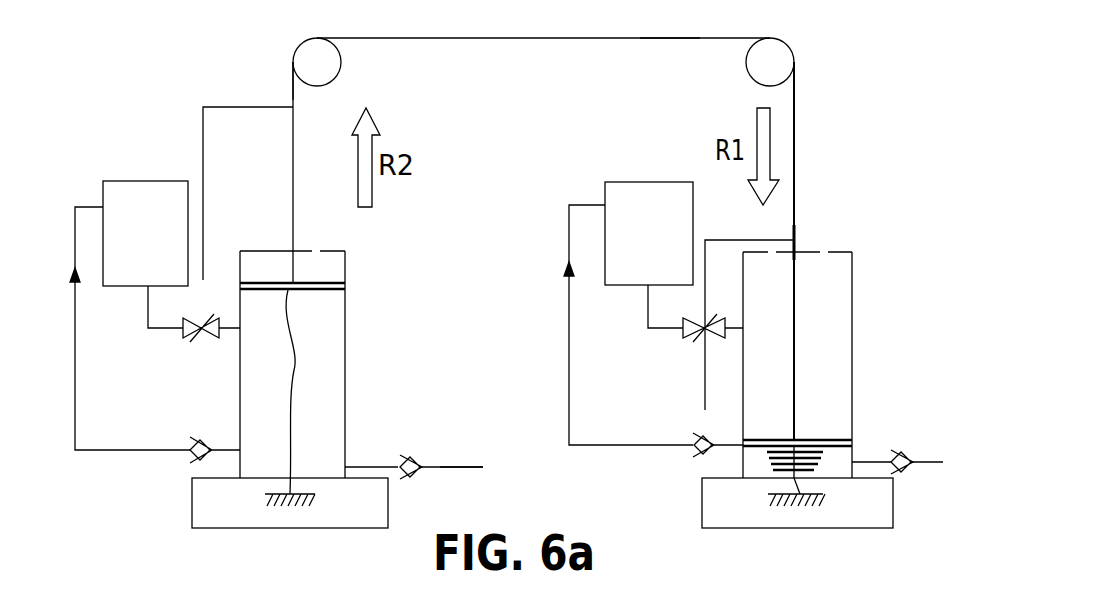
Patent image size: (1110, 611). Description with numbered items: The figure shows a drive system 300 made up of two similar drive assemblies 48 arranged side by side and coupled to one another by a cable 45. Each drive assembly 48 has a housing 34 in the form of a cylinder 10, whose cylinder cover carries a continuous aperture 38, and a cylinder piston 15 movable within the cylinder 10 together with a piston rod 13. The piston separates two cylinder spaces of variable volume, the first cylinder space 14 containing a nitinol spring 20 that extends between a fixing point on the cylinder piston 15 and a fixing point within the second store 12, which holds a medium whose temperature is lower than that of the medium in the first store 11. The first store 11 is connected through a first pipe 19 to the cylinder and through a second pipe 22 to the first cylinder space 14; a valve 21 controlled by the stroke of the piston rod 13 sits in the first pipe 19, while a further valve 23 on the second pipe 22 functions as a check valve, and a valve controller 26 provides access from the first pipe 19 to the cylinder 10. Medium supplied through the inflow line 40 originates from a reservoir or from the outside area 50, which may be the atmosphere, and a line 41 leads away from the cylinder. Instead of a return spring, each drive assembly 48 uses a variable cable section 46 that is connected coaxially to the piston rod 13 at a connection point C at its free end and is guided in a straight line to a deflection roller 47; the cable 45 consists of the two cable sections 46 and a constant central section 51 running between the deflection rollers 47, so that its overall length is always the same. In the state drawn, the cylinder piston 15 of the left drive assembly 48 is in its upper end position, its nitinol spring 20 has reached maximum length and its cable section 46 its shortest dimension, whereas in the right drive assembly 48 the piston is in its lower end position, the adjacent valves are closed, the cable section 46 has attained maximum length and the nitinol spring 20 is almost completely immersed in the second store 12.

The cylinder 10 is at (346, 350).
The first store 11 is at (155, 181).
The second store 12 is at (192, 505).
The piston rod 13 is at (300, 180).
The first cylinder space 14 is at (325, 393).
The cylinder piston 15 is at (324, 290).
The first pipe 19 is at (172, 333).
The nitinol spring 20 is at (287, 423).
The valve 21 is at (195, 340).
The second pipe 22 is at (78, 407).
The further valve 23 is at (690, 440).
The valve controller 26 is at (202, 122).
The housing 34 is at (365, 333).
The continuous aperture 38 is at (262, 250).
The inflow line 40 is at (442, 462).
The valve 41 is at (412, 456).
The cable 45 is at (498, 37).
The cable section 46 is at (290, 82).
The deflection roller 47 is at (312, 50).
The drive assembly 48 is at (125, 157).
The outside area 50 is at (937, 367).
The constant central section 51 is at (663, 40).
The drive system 300 is at (828, 82).
The connection point C is at (800, 226).